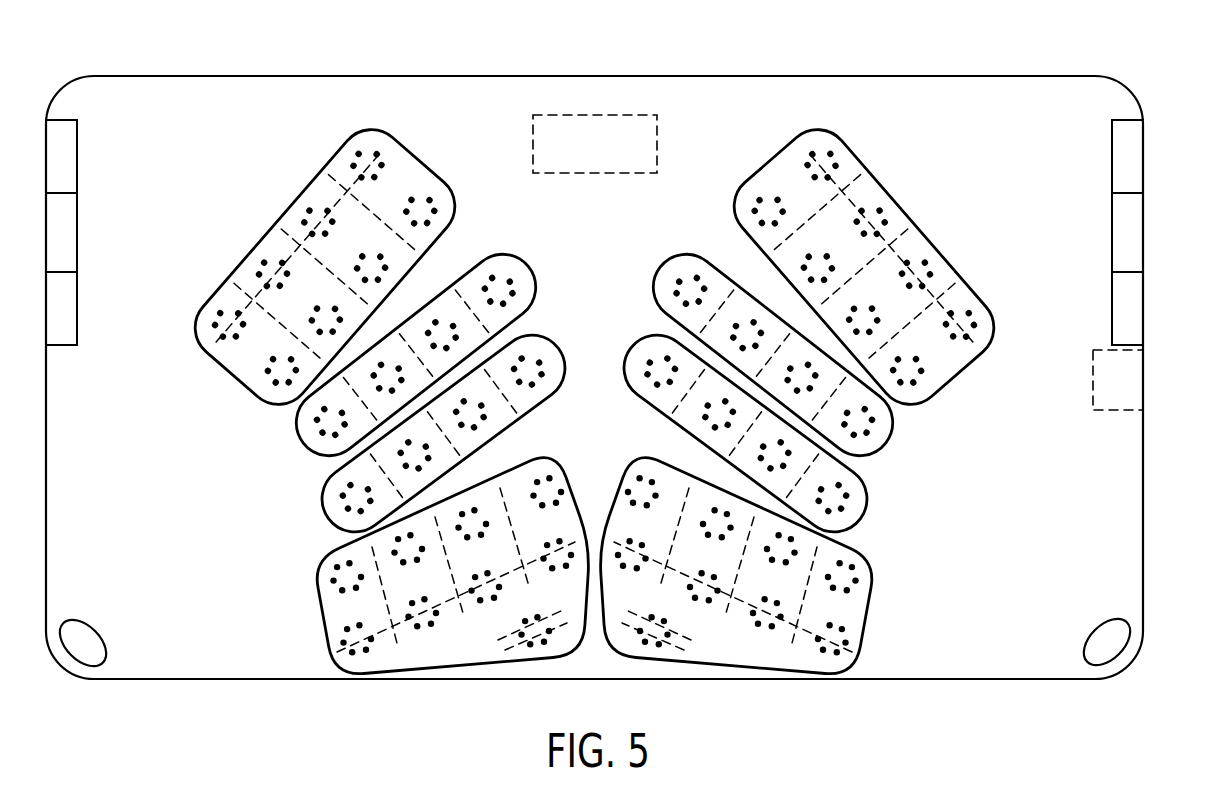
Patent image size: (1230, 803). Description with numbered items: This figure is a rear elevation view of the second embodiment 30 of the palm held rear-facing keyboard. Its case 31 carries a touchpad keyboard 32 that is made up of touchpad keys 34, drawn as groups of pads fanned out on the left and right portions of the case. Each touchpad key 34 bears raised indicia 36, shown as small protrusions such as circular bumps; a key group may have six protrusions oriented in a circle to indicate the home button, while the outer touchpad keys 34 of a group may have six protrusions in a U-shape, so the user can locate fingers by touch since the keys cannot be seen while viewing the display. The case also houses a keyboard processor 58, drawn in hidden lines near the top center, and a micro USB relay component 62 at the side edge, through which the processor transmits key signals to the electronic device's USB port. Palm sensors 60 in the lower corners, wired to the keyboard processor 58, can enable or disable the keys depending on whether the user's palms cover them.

The second embodiment 30 is at (320, 700).
The case 31 is at (211, 681).
The touchpad keyboard 32 is at (593, 395).
The touchpad keys 34 is at (276, 226).
The raised indicia 36 is at (492, 268).
The keyboard processor 58 is at (594, 115).
The palm sensors 60 is at (78, 641).
The micro USB relay component 62 is at (1125, 381).